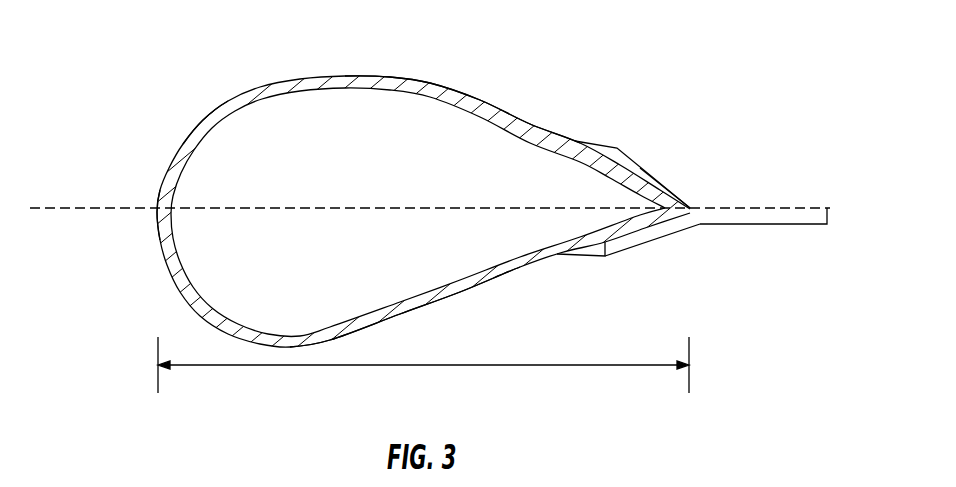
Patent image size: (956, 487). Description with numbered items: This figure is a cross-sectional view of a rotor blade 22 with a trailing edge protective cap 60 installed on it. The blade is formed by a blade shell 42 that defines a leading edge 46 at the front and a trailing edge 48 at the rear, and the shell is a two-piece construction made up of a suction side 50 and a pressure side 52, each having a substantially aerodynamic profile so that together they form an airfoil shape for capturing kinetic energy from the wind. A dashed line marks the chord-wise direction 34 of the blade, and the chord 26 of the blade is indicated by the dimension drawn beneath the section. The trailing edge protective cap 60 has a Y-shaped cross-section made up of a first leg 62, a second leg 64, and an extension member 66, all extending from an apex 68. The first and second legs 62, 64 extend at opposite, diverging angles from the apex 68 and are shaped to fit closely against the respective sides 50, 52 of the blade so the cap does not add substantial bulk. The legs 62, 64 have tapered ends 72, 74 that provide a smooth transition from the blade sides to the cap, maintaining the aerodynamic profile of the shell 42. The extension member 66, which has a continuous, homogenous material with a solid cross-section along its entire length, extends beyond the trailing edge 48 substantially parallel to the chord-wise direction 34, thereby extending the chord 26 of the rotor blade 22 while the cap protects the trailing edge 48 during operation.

The rotor blade 22 is at (273, 57).
The chord 26 is at (415, 366).
The chord-wise direction 34 is at (96, 207).
The blade shell 42 is at (205, 114).
The leading edge 46 is at (158, 228).
The trailing edge 48 is at (690, 207).
The suction side 50 is at (477, 98).
The pressure side 52 is at (425, 307).
The trailing edge protective cap 60 is at (770, 172).
The first leg 62 is at (678, 198).
The second leg 64 is at (657, 230).
The extension member 66 is at (780, 213).
The apex 68 is at (702, 215).
The tapered end 72 is at (598, 145).
The tapered end 74 is at (590, 248).